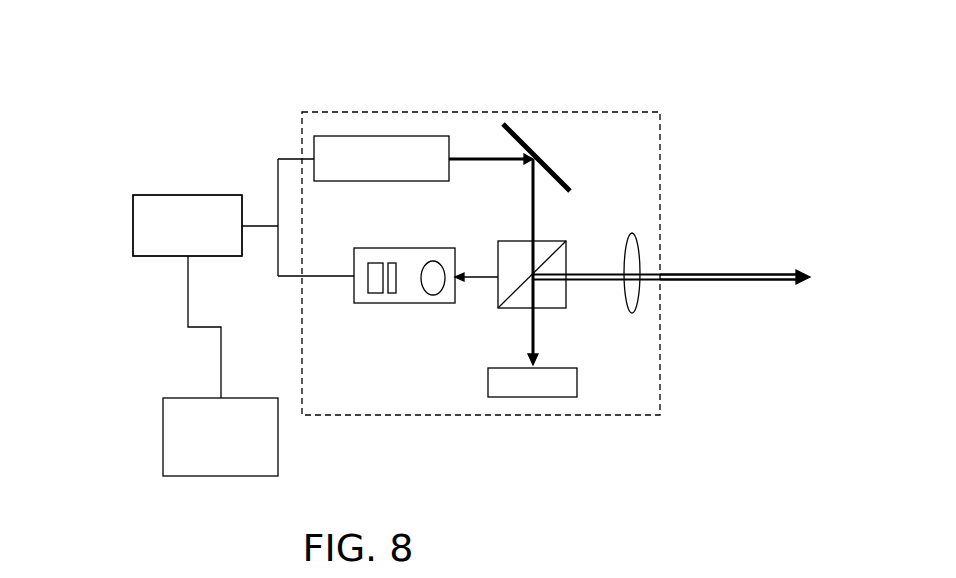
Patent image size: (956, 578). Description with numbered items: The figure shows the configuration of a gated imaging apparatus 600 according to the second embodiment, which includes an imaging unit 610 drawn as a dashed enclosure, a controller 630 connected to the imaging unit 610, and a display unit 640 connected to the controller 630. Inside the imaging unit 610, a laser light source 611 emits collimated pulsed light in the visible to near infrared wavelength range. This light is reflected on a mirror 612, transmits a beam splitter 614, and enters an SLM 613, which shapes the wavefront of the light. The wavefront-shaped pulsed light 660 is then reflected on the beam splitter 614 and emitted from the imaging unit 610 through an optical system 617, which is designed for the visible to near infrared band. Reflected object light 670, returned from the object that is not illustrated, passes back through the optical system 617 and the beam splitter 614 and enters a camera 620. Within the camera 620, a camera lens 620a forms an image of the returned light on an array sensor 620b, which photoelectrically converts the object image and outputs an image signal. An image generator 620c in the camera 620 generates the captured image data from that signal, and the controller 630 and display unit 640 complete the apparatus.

The gated imaging apparatus 600 is at (138, 92).
The imaging unit 610 is at (347, 107).
The laser light source 611 is at (351, 181).
The mirror 612 is at (528, 135).
The SLM 613 is at (488, 394).
The beam splitter 614 is at (567, 265).
The optical system 617 is at (630, 298).
The camera 620 is at (403, 295).
The camera lens 620a is at (433, 302).
The array sensor 620b is at (393, 303).
The image generator 620c is at (375, 295).
The controller 630 is at (145, 225).
The display unit 640 is at (175, 427).
The pulsed light 660 is at (763, 268).
The reflected object light 670 is at (688, 285).